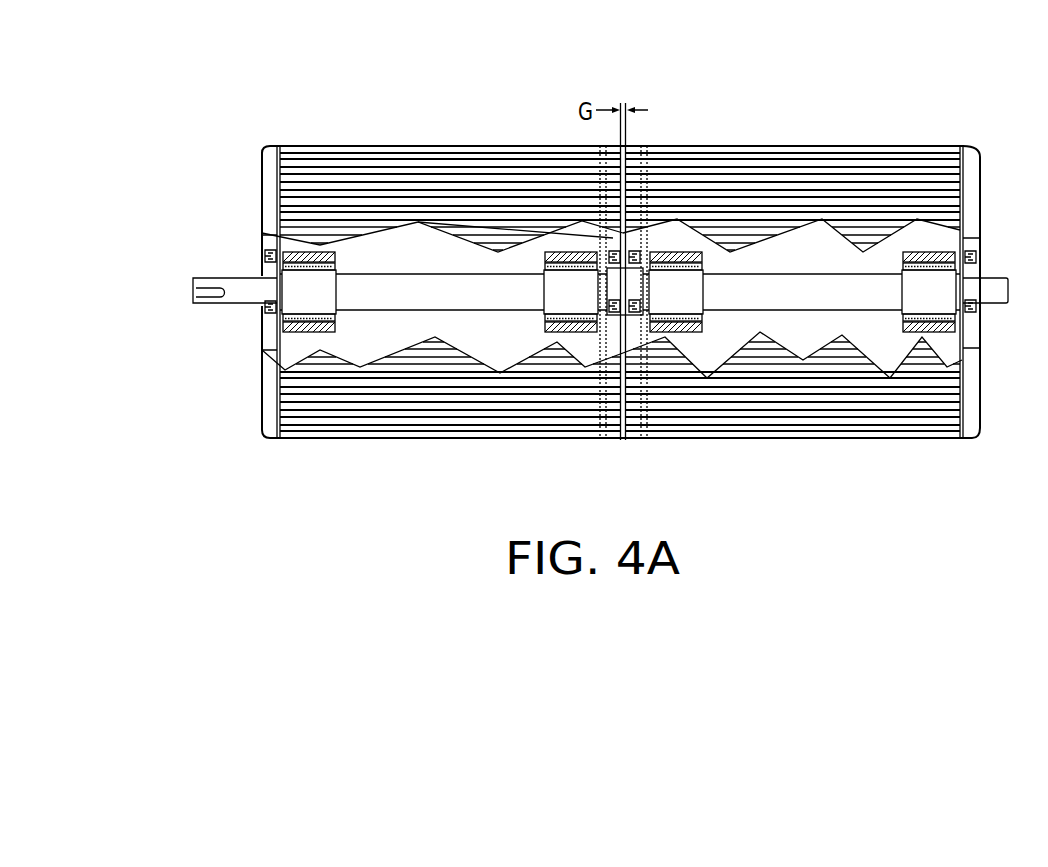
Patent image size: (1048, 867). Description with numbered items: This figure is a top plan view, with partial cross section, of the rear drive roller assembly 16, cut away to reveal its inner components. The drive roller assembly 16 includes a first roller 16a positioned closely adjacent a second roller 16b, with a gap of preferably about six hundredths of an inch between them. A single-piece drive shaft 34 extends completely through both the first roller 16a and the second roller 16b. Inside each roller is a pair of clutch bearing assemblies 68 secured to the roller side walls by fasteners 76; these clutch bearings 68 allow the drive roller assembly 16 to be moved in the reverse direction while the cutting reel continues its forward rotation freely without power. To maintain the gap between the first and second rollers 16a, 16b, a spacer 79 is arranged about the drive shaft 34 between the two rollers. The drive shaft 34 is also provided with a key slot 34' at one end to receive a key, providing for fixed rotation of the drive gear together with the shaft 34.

The rear drive roller assembly 16 is at (800, 118).
The first roller 16a is at (420, 437).
The second roller 16b is at (798, 437).
The drive shaft 34 is at (992, 250).
The key slot 34' is at (208, 317).
The clutch bearing assembly 68 is at (336, 255).
The fastener 76 is at (265, 256).
The spacer 79 is at (632, 270).